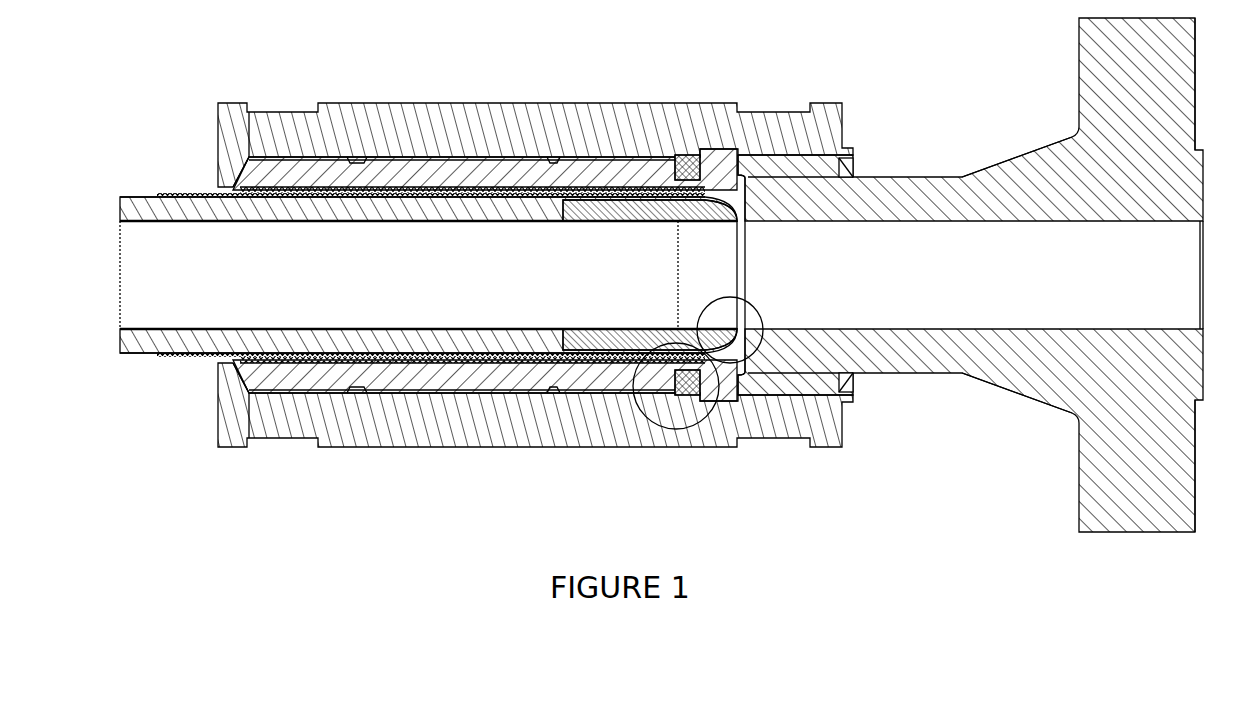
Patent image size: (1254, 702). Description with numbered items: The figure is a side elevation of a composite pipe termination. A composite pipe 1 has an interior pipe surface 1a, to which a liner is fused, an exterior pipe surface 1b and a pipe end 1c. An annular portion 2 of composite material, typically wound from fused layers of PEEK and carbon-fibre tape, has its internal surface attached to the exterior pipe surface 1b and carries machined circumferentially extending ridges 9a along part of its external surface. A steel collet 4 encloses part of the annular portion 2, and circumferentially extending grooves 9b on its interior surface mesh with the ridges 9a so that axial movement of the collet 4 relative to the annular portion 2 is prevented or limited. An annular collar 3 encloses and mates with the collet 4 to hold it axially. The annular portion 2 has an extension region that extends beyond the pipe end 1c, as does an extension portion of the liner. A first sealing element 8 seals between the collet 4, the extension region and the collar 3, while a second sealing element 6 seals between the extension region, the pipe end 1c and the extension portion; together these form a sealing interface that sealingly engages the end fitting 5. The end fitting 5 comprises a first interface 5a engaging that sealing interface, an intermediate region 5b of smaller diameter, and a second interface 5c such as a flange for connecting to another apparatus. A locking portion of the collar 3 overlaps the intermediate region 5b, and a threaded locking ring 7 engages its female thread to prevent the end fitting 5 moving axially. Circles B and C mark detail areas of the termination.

The composite pipe 1 is at (140, 193).
The interior pipe surface 1a is at (178, 217).
The exterior pipe surface 1b is at (219, 187).
The pipe end 1c is at (682, 277).
The annular portion 2 is at (188, 190).
The annular collar 3 is at (522, 103).
The collet 4 is at (560, 177).
The end fitting 5 is at (910, 177).
The first interface 5a is at (710, 207).
The intermediate region 5b is at (943, 177).
The second interface 5c is at (1197, 130).
The second sealing element 6 is at (617, 192).
The locking ring 7 is at (857, 165).
The first sealing element 8 is at (678, 163).
The circumferentially extending ridges 9a is at (320, 190).
The circumferentially extending grooves 9b is at (357, 181).
The detail B is at (717, 437).
The detail C is at (760, 358).